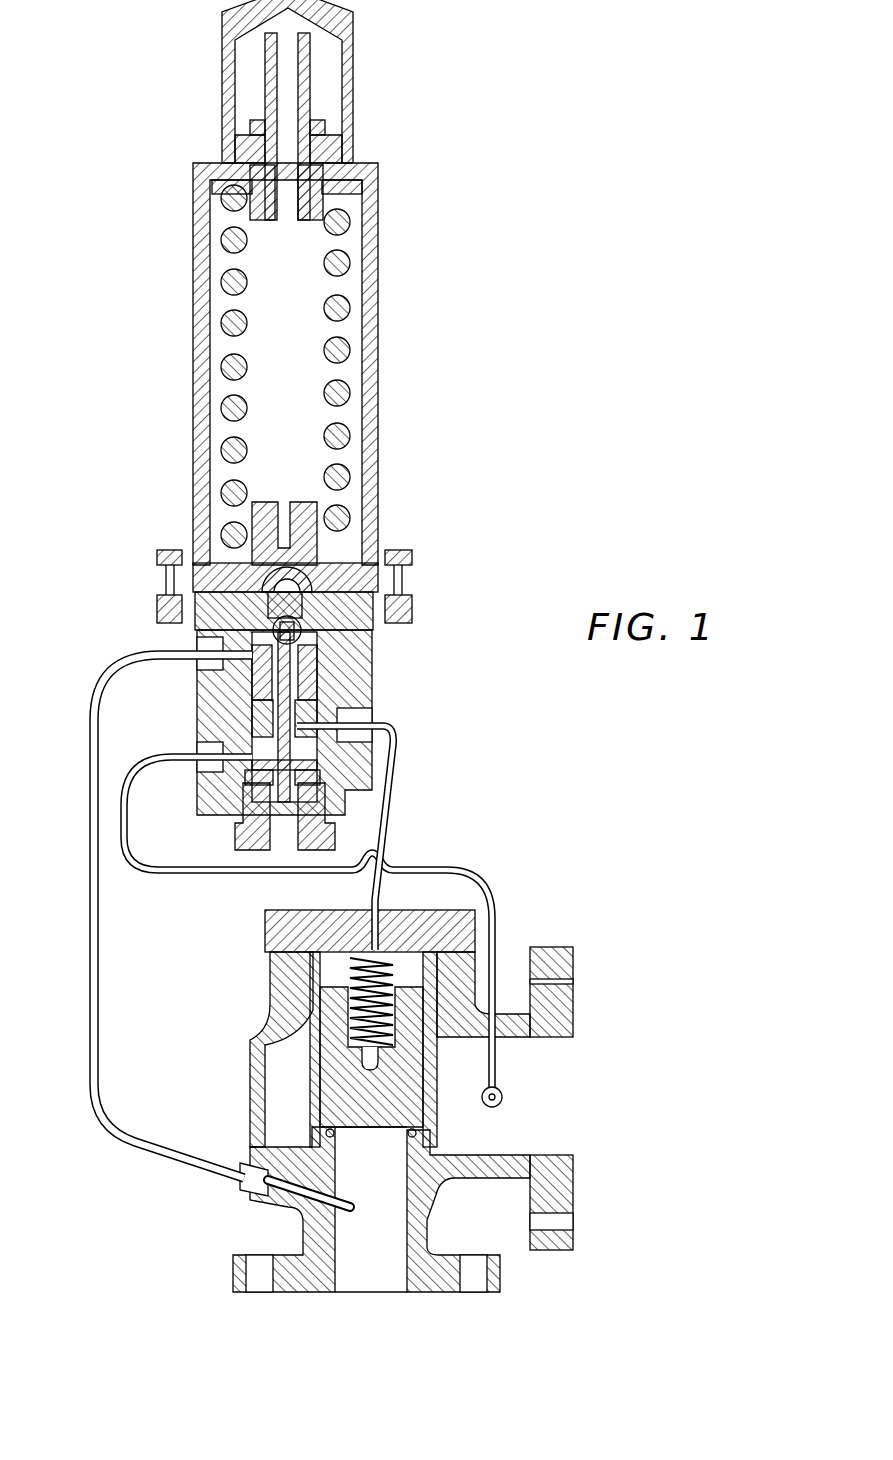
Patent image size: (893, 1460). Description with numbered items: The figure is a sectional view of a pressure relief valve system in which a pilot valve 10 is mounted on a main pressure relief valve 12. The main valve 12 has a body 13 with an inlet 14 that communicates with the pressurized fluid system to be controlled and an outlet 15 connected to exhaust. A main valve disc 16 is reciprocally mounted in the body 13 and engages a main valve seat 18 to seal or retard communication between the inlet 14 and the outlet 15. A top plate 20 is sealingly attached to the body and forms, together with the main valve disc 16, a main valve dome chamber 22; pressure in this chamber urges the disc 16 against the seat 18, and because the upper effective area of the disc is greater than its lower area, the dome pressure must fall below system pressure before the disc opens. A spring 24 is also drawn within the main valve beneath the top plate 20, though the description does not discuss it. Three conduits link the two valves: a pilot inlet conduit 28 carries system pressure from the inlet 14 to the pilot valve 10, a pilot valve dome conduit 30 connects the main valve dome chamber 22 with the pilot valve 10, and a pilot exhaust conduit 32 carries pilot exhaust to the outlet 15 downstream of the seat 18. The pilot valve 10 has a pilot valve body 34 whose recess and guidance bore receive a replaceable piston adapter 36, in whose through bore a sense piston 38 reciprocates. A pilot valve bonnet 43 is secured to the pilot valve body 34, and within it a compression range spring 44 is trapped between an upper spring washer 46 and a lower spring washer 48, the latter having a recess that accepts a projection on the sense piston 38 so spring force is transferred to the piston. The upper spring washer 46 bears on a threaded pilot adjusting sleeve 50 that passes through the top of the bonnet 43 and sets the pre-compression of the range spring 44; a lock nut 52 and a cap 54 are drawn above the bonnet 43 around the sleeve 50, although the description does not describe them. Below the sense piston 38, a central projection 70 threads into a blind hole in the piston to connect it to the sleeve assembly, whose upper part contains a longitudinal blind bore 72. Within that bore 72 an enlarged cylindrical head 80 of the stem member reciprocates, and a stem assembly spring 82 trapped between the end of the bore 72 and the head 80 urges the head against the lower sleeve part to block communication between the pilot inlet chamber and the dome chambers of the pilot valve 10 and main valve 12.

The pilot valve 10 is at (307, 425).
The main pressure relief valve 12 is at (423, 1090).
The body 13 is at (269, 1000).
The inlet 14 is at (394, 1282).
The outlet 15 is at (555, 1157).
The main valve disc 16 is at (352, 1128).
The main valve seat 18 is at (410, 1168).
The top plate 20 is at (432, 910).
The main valve dome chamber 22 is at (328, 975).
The piston spring 24 is at (345, 962).
The pilot inlet conduit 28 is at (91, 982).
The pilot valve dome conduit 30 is at (396, 748).
The pilot exhaust conduit 32 is at (478, 888).
The pilot valve body 34 is at (394, 621).
The piston adapter 36 is at (390, 598).
The sense piston 38 is at (246, 576).
The pilot valve bonnet 43 is at (378, 206).
The compression range spring 44 is at (222, 408).
The upper spring washer 46 is at (216, 188).
The lower spring washer 48 is at (216, 562).
The pilot adjusting sleeve 50 is at (266, 90).
The lock nut 52 is at (252, 128).
The cap 54 is at (226, 50).
The central projection 70 is at (302, 578).
The blind bore 72 is at (314, 634).
The cylindrical head 80 is at (310, 652).
The stem assembly spring 82 is at (250, 652).